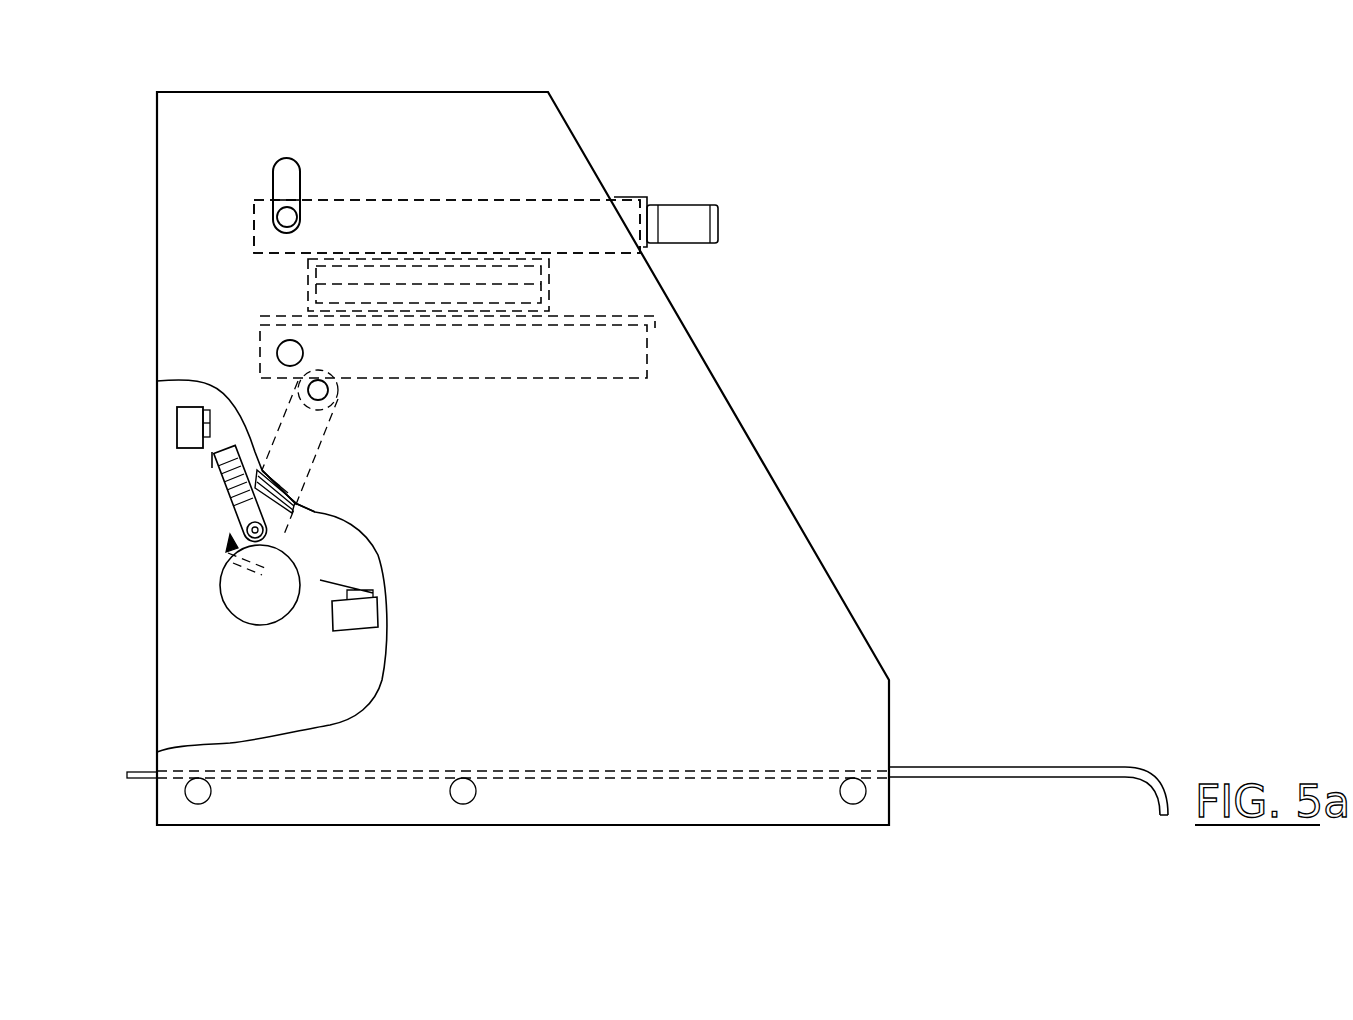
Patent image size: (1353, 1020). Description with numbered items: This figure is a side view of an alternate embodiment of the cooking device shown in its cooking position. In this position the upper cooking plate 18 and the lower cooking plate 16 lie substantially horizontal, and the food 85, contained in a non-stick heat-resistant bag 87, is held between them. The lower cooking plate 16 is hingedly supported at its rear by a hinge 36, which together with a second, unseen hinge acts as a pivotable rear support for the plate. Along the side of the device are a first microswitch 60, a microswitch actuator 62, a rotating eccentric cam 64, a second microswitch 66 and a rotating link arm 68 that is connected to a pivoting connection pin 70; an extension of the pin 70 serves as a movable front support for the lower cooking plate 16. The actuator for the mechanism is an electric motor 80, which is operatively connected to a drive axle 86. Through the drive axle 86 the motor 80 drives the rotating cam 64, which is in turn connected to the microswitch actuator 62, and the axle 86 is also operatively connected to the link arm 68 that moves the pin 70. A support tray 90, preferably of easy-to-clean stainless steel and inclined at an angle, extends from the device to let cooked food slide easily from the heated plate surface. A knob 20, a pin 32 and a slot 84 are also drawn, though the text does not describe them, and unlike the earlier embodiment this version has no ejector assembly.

The lower cooking plate 16 is at (572, 355).
The upper cooking plate 18 is at (475, 228).
The knob 20 is at (775, 142).
The pin 32 is at (278, 222).
The hinge 36 is at (286, 352).
The first microswitch 60 is at (185, 422).
The microswitch actuator 62 is at (237, 478).
The rotating eccentric cam 64 is at (356, 529).
The second microswitch 66 is at (350, 617).
The rotating link arm 68 is at (383, 464).
The pivoting connection pin 70 is at (415, 394).
The electric motor 80 is at (237, 597).
The slot 84 is at (273, 177).
The food 85 is at (410, 268).
The drive axle 86 is at (247, 537).
The non-stick heat-resistant bag 87 is at (549, 299).
The support tray 90 is at (1013, 712).